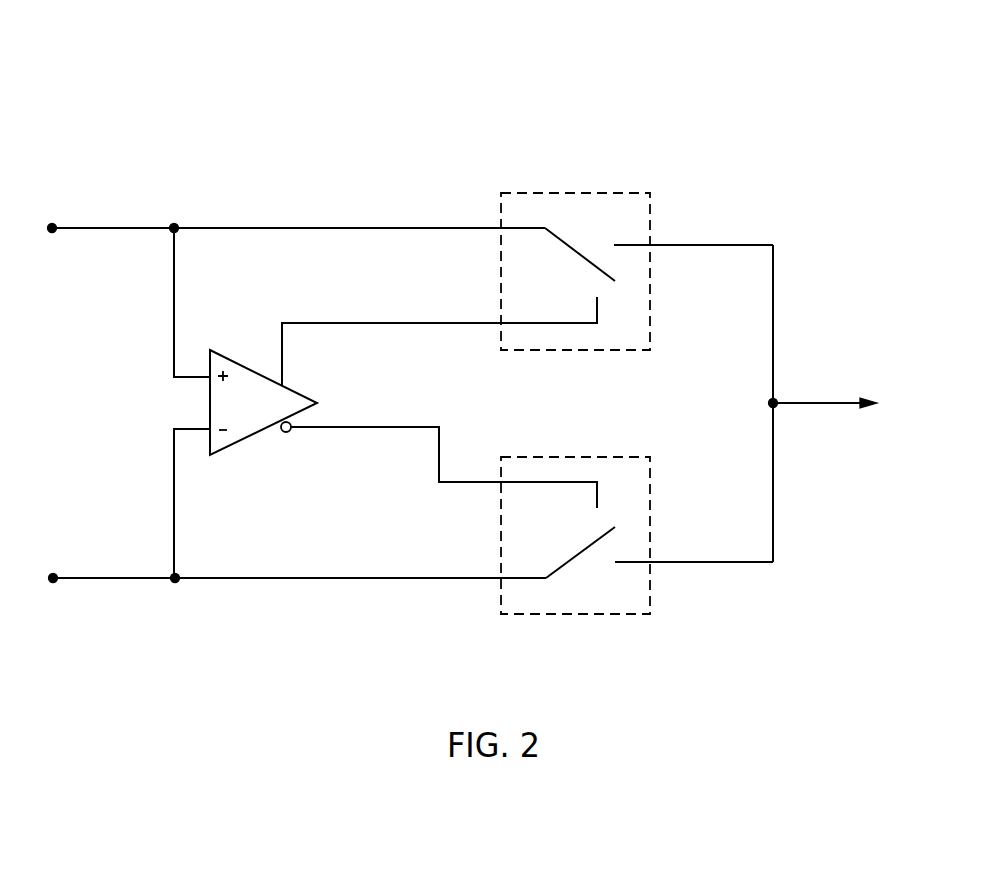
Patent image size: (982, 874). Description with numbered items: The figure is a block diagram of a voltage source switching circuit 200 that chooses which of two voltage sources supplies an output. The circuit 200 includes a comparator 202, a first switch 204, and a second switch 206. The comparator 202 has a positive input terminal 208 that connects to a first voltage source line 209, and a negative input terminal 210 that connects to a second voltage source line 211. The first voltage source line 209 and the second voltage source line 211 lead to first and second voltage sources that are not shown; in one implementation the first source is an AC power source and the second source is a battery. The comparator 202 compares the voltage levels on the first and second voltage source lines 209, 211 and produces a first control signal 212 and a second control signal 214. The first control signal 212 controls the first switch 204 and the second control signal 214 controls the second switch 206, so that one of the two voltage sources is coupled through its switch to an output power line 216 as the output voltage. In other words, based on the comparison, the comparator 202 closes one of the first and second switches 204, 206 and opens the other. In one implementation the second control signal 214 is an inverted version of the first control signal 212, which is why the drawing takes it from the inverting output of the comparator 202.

The voltage source switching circuit 200 is at (330, 54).
The comparator 202 is at (254, 453).
The first switch 204 is at (582, 175).
The second switch 206 is at (582, 442).
The positive input terminal 208 is at (207, 376).
The first voltage source line 209 is at (69, 214).
The negative input terminal 210 is at (208, 430).
The second voltage source line 211 is at (85, 592).
The first control signal 212 is at (396, 324).
The second control signal 214 is at (467, 483).
The output power line 216 is at (810, 415).